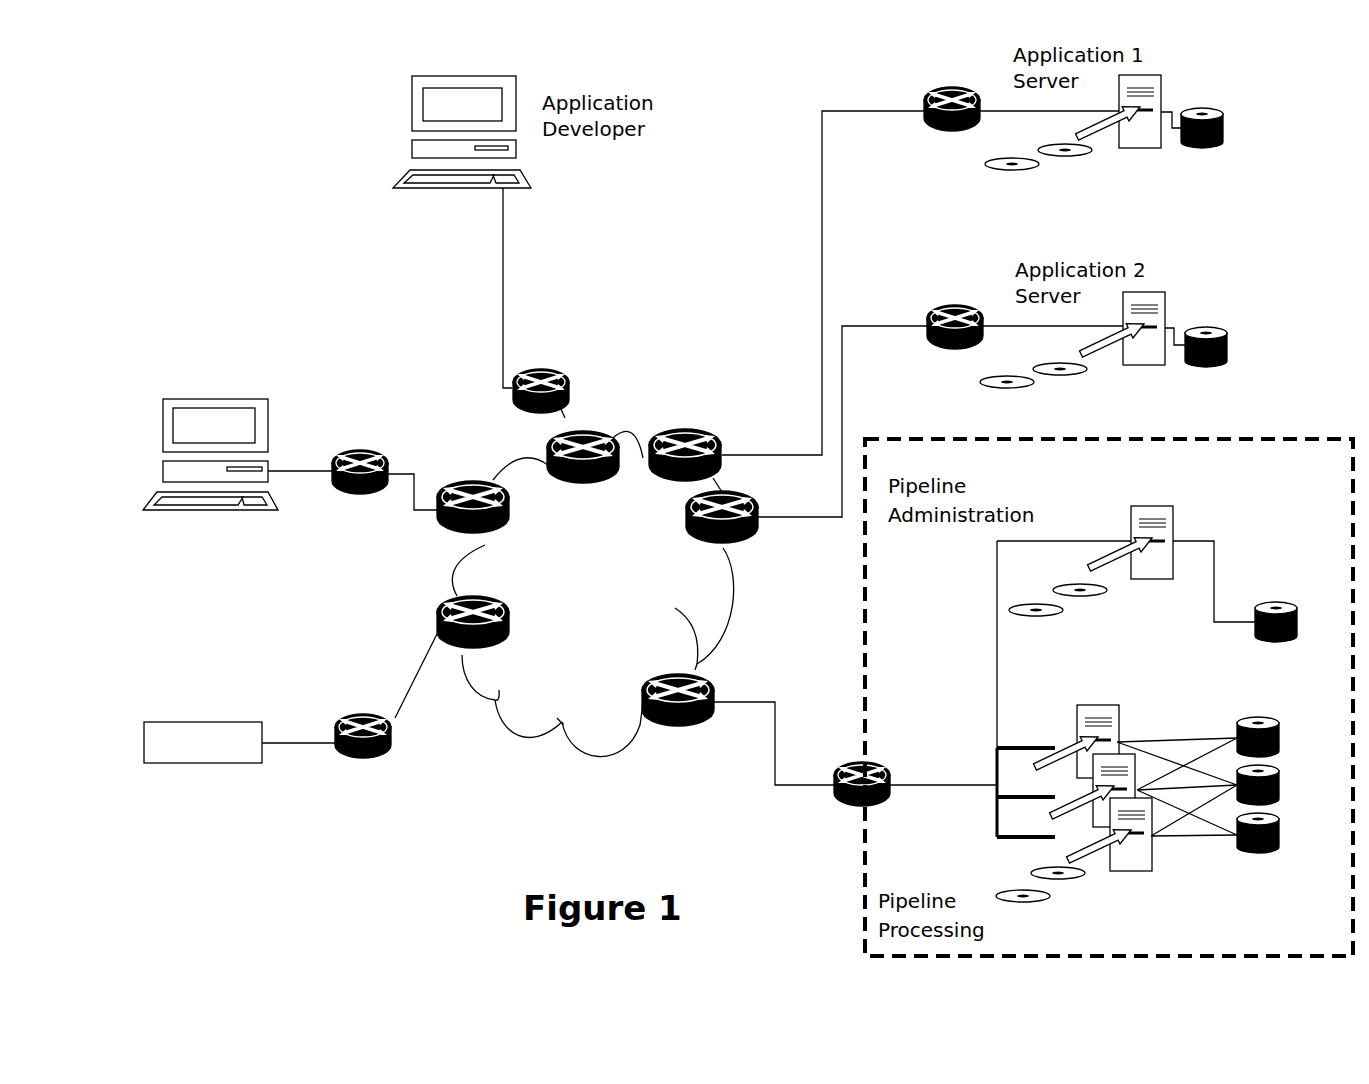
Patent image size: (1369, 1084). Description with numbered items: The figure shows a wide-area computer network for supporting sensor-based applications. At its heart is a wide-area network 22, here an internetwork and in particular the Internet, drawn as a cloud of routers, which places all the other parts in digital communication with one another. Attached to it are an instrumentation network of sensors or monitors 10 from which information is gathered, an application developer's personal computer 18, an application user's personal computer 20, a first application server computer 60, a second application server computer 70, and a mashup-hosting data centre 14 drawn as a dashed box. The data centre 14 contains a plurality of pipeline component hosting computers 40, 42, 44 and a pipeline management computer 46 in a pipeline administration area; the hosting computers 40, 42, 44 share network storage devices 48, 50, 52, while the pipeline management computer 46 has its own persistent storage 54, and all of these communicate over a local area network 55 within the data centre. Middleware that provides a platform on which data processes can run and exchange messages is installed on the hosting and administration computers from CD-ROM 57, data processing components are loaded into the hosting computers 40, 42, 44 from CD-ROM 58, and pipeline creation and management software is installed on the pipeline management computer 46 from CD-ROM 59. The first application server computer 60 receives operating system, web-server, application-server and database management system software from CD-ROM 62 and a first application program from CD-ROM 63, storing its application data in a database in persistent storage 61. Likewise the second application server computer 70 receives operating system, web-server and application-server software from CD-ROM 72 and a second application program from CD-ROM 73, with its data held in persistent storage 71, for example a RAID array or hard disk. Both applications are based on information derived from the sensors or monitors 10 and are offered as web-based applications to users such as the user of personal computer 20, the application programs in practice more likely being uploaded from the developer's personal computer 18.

The sensors or monitors 10 is at (187, 722).
The mashup-hosting data centre 14 is at (1222, 439).
The application developer's personal computer 18 is at (411, 112).
The application user's personal computer 20 is at (170, 399).
The wide-area network 22 is at (597, 563).
The pipeline component hosting computer 40 is at (1117, 705).
The pipeline component hosting computer 42 is at (1122, 754).
The pipeline component hosting computer 44 is at (1140, 872).
The pipeline management computer 46 is at (1162, 506).
The network storage device 48 is at (1277, 743).
The network storage device 50 is at (1277, 798).
The network storage device 52 is at (1277, 850).
The persistent storage 54 is at (1277, 645).
The local area network 55 is at (1025, 743).
The CD-ROM 57 is at (1080, 593).
The CD-ROM 58 is at (1023, 900).
The CD-ROM 59 is at (1036, 613).
The first application server computer 60 is at (1161, 88).
The persistent storage 61 is at (1225, 128).
The CD-ROM 62 is at (1065, 153).
The CD-ROM 63 is at (1013, 168).
The second application server computer 70 is at (1165, 303).
The persistent storage 71 is at (1227, 347).
The CD-ROM 72 is at (1060, 371).
The CD-ROM 73 is at (1007, 384).